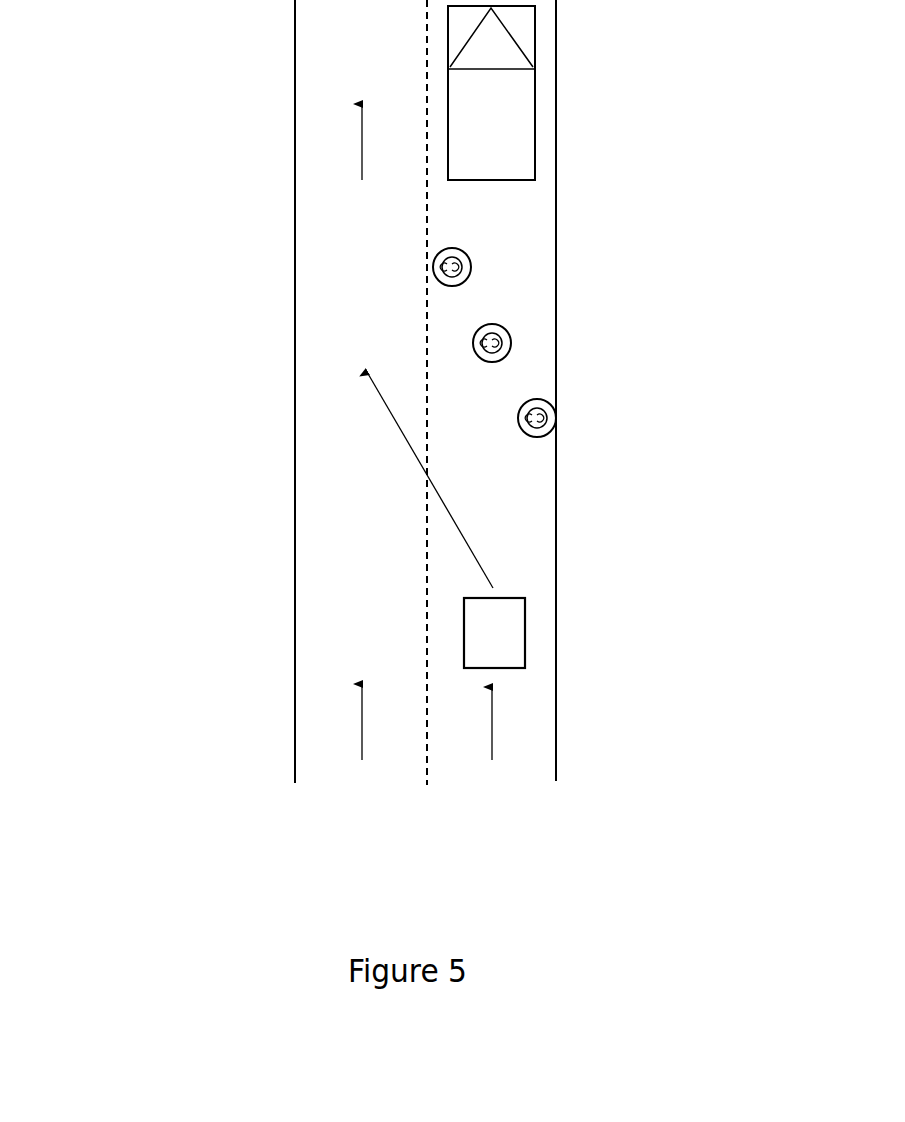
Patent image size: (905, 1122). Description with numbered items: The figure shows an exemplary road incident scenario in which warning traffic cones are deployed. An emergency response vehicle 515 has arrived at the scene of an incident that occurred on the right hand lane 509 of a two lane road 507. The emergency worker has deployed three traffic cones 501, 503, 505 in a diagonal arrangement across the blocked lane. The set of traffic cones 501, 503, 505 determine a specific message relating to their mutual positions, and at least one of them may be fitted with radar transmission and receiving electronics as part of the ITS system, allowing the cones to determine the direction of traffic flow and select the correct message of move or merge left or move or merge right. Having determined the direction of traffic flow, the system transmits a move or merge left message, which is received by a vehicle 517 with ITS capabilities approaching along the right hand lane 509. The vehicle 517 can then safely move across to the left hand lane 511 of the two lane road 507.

The traffic cone 501 is at (465, 255).
The traffic cone 503 is at (500, 338).
The traffic cone 505 is at (545, 413).
The two lane road 507 is at (557, 538).
The right hand lane 509 is at (545, 728).
The left hand lane 511 is at (319, 747).
The emergency response vehicle 515 is at (493, 90).
The vehicle 517 is at (495, 633).